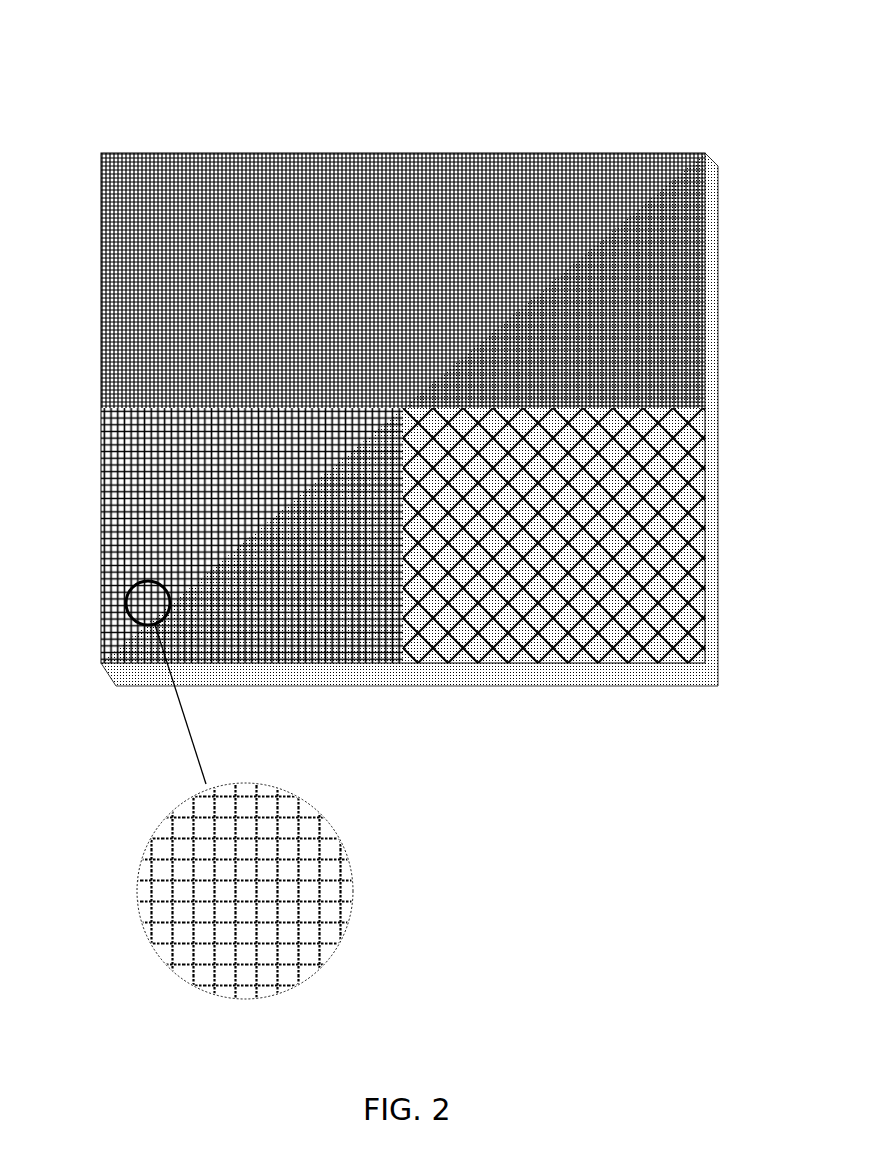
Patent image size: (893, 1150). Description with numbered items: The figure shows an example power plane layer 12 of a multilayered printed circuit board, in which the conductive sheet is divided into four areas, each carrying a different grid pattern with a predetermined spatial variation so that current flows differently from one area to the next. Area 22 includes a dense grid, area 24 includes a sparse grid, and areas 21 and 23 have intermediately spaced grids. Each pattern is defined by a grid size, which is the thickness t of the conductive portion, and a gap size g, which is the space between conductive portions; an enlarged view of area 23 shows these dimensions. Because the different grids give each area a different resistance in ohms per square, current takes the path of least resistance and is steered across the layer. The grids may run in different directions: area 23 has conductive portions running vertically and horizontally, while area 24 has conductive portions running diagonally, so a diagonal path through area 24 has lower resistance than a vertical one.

The power plane layer 12 is at (407, 347).
The area 21 is at (118, 145).
The area 22 is at (536, 145).
The area 23 is at (93, 517).
The area 24 is at (697, 483).
The gap size g is at (123, 900).
The thickness t is at (155, 806).